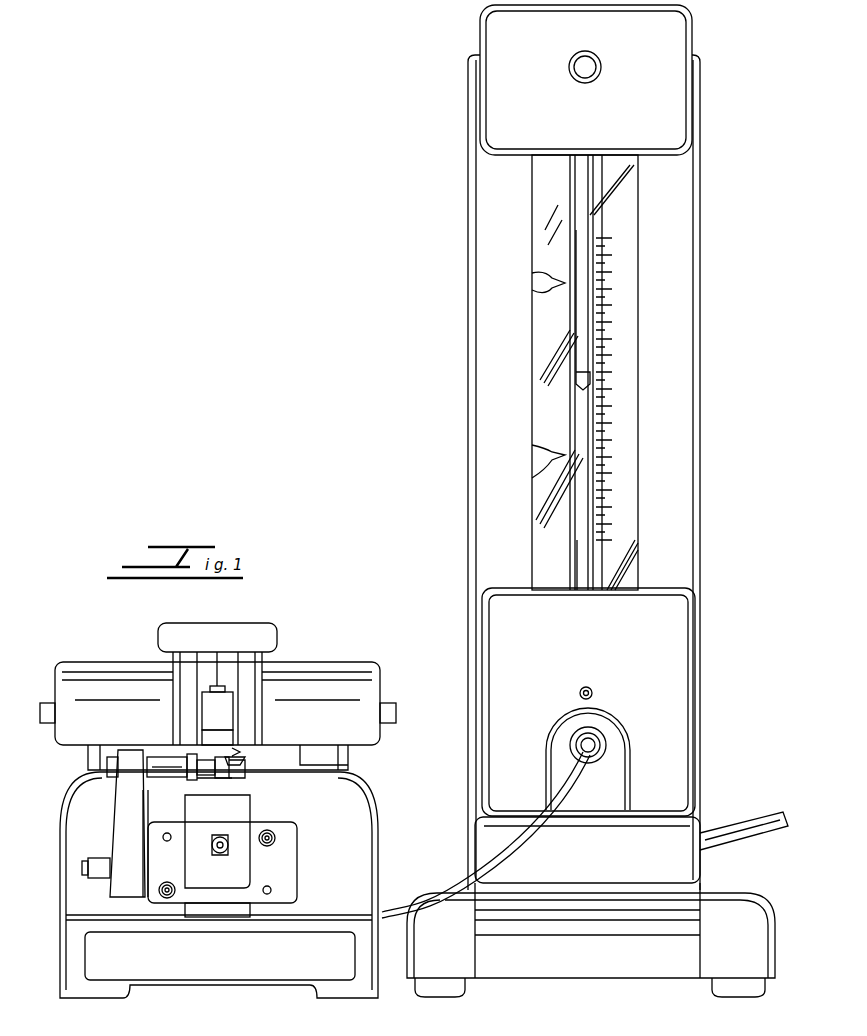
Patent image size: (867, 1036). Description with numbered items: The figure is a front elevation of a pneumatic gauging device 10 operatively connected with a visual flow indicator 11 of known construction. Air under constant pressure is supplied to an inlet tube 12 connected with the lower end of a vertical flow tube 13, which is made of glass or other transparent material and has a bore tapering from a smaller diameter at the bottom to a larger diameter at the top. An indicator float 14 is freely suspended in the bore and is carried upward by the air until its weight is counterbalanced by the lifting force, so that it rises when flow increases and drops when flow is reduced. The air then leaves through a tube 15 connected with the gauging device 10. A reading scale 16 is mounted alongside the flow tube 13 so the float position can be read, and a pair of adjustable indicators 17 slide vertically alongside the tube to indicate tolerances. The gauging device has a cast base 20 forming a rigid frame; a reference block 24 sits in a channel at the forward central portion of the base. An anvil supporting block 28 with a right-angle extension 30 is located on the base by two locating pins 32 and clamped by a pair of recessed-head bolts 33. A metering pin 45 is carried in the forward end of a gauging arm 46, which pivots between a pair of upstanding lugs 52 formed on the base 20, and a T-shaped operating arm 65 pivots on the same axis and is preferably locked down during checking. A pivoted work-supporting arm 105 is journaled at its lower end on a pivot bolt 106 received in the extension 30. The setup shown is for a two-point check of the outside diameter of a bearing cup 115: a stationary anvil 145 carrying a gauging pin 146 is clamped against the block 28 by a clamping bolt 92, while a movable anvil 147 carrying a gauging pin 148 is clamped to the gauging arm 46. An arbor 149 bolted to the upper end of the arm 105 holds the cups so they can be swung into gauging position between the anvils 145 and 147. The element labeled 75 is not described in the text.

The gauging device 10 is at (338, 650).
The visual flow indicator 11 is at (446, 332).
The inlet tube 12 is at (765, 830).
The vertical flow tube 13 is at (575, 568).
The indicator float 14 is at (578, 383).
The tube 15 is at (510, 843).
The reading scale 16 is at (625, 348).
The adjustable indicators 17 is at (532, 485).
The base 20 is at (378, 835).
The reference block 24 is at (215, 910).
The anvil supporting block 28 is at (285, 860).
The right-angle extension 30 is at (160, 851).
The locating pins 32 is at (162, 833).
The recessed-head bolts 33 is at (176, 887).
The metering pin 45 is at (217, 688).
The gauging arm 46 is at (228, 708).
The upstanding lugs 52 is at (348, 755).
The T-shaped operating arm 65 is at (297, 662).
The handle 75 is at (262, 625).
The clamping bolt 92 is at (217, 850).
The pivoted work-supporting arm 105 is at (122, 808).
The pivot bolt 106 is at (85, 867).
The bearing cup 115 is at (225, 778).
The stationary anvil 145 is at (240, 790).
The gauging pin 146 is at (218, 780).
The movable anvil 147 is at (228, 728).
The gauging pin 148 is at (245, 752).
The arbor 149 is at (170, 760).